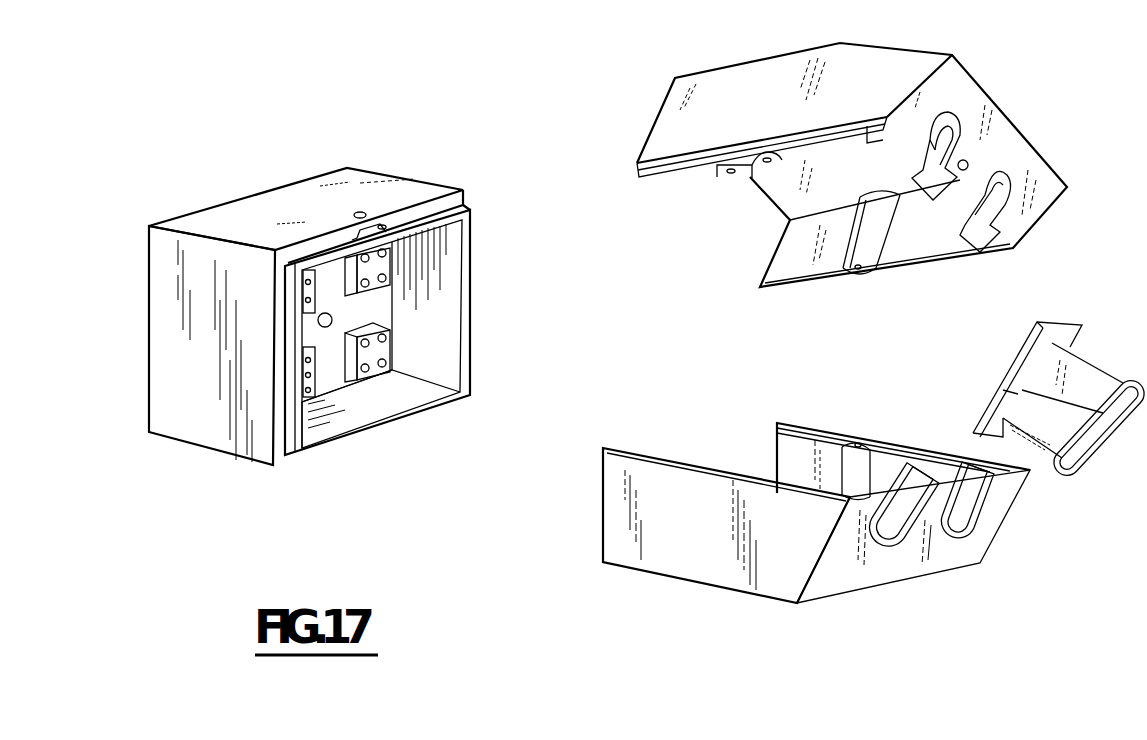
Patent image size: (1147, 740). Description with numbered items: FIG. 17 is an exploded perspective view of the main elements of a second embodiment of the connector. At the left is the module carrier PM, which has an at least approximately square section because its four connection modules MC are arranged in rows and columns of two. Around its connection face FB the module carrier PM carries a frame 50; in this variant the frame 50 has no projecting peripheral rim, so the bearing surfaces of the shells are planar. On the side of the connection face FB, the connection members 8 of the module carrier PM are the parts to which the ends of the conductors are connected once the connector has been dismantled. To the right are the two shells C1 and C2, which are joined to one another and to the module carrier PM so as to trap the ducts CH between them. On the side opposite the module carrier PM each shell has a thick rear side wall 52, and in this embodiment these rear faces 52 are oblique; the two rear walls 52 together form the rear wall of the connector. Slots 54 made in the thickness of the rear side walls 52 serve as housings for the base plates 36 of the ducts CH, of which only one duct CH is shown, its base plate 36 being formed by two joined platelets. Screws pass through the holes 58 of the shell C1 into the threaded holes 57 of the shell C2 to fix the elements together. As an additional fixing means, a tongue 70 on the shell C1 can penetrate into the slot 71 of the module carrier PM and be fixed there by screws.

The module carrier PM is at (195, 228).
The slot 71 is at (378, 228).
The connection module MC is at (387, 268).
The connection member 8 is at (393, 362).
The connection face FB is at (372, 407).
The frame 50 is at (289, 432).
The shell C1 is at (678, 102).
The tongue 70 is at (723, 178).
The rear side wall 52 is at (983, 142).
The slot 54 is at (1020, 173).
The hole 58 is at (858, 270).
The shell C2 is at (675, 560).
The threaded hole 57 is at (858, 444).
The base plate 36 is at (1030, 347).
The duct CH is at (1118, 358).